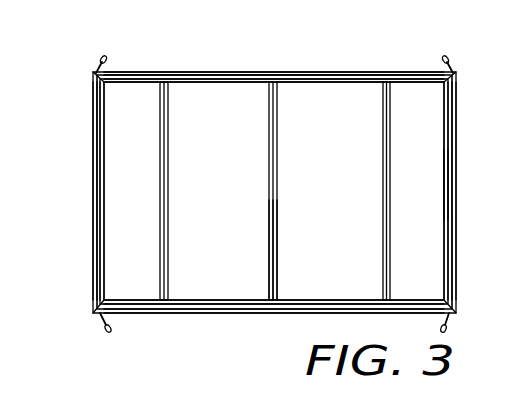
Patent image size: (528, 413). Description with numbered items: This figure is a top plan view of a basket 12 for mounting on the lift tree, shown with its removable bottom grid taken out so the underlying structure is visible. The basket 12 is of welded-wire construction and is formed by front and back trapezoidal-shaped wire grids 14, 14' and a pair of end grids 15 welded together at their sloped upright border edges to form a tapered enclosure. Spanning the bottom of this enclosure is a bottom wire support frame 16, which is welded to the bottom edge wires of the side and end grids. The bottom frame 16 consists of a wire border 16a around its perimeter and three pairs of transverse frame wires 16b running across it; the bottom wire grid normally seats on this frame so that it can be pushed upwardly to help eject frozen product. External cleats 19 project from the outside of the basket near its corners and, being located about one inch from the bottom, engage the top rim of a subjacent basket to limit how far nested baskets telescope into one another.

The basket 12 is at (207, 72).
The back wire grid 14' is at (274, 57).
The front wire grid 14 is at (274, 336).
The end grid 15 is at (93, 209).
The bottom wire support frame 16 is at (268, 175).
The wire border 16a is at (444, 185).
The transverse frame wires 16b is at (277, 246).
The external cleats 19 is at (108, 334).